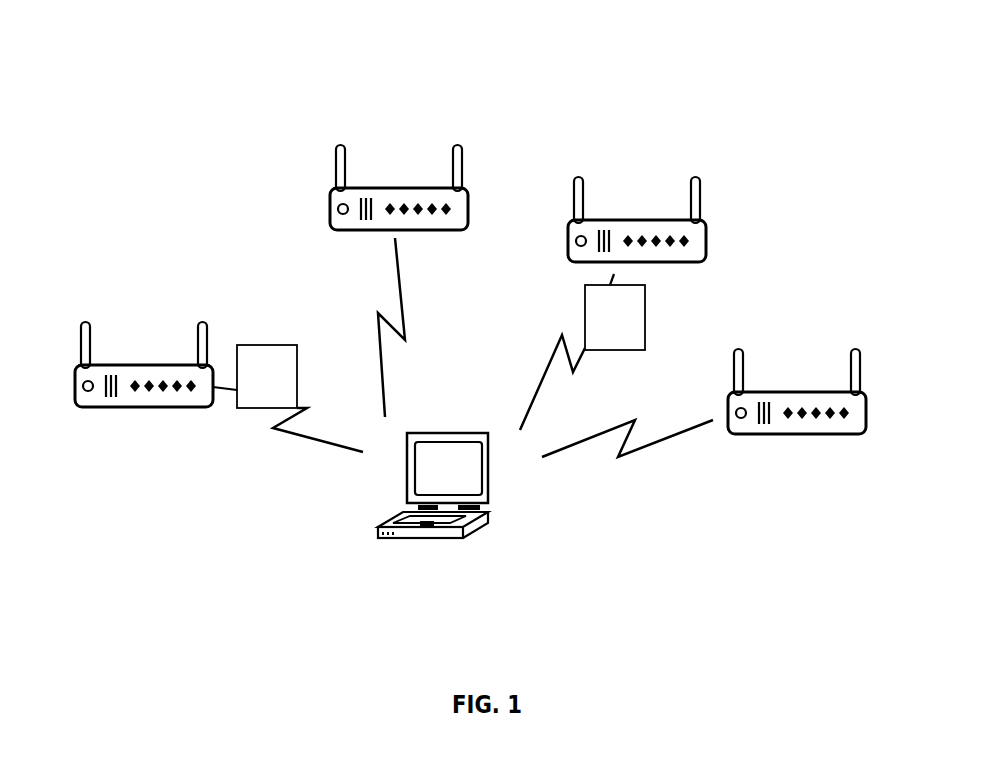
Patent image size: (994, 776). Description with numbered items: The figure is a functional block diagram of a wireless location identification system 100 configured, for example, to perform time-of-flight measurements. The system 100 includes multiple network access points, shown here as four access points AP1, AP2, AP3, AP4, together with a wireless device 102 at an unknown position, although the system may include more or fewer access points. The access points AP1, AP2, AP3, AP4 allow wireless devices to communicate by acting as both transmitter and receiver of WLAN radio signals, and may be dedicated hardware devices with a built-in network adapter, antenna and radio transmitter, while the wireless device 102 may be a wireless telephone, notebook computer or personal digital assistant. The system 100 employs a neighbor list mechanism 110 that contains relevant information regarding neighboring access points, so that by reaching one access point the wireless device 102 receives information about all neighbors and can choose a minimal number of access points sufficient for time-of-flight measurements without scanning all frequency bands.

The wireless location identification system 100 is at (484, 67).
The wireless device 102 is at (433, 519).
The neighbor list mechanism 110 is at (429, 363).
The network access point AP1 is at (123, 357).
The network access point AP2 is at (426, 187).
The network access point AP3 is at (667, 219).
The network access point AP4 is at (819, 391).